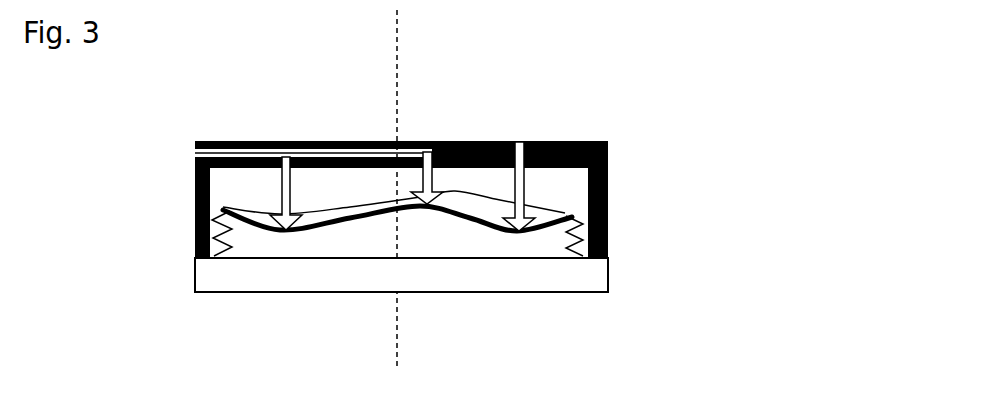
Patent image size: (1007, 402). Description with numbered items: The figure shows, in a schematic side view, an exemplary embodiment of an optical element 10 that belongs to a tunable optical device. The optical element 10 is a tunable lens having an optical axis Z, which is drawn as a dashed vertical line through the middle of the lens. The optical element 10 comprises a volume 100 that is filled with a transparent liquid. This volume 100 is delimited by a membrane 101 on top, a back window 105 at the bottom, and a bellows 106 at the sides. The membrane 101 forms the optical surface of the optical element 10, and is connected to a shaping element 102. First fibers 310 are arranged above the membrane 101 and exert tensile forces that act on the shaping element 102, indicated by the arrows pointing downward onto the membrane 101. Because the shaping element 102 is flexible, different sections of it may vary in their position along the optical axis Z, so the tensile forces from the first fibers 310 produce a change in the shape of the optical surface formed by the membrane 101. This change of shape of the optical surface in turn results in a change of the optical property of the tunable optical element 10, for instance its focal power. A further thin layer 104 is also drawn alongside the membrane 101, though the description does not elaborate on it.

The optical element 10 is at (441, 243).
The optical axis Z is at (397, 43).
The first fibers 310 is at (452, 148).
The bellows 106 is at (196, 246).
The volume 100 is at (537, 248).
The back window 105 is at (500, 272).
The shaping element 102 is at (247, 228).
The membrane 101 is at (320, 212).
The thin layer / electrode 104 is at (422, 205).